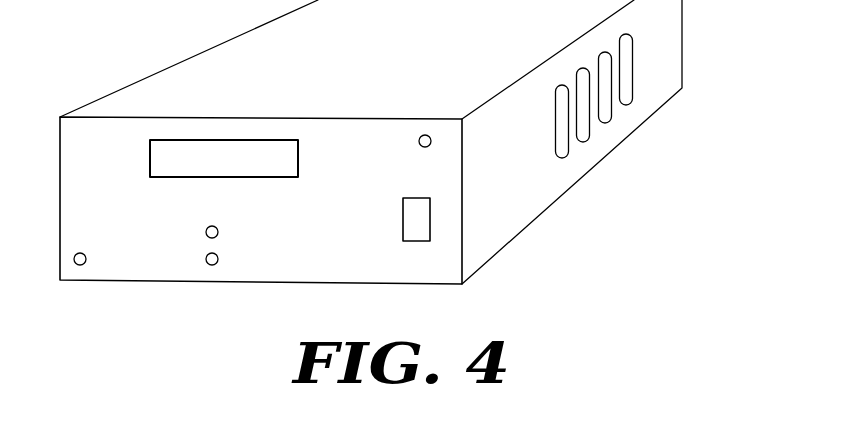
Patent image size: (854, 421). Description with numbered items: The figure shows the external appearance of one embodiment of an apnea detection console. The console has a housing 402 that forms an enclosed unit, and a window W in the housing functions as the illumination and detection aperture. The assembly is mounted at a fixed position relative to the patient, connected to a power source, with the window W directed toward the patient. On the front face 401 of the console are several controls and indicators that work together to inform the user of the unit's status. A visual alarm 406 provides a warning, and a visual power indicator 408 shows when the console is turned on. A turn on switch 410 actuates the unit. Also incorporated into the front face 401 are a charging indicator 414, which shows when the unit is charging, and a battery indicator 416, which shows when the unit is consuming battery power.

The front face 401 is at (345, 270).
The housing 402 is at (505, 223).
The visual alarm 406 is at (77, 264).
The visual power indicator 408 is at (424, 134).
The turn on switch 410 is at (413, 225).
The charging indicator 414 is at (213, 226).
The battery indicator 416 is at (208, 265).
The window W is at (202, 156).